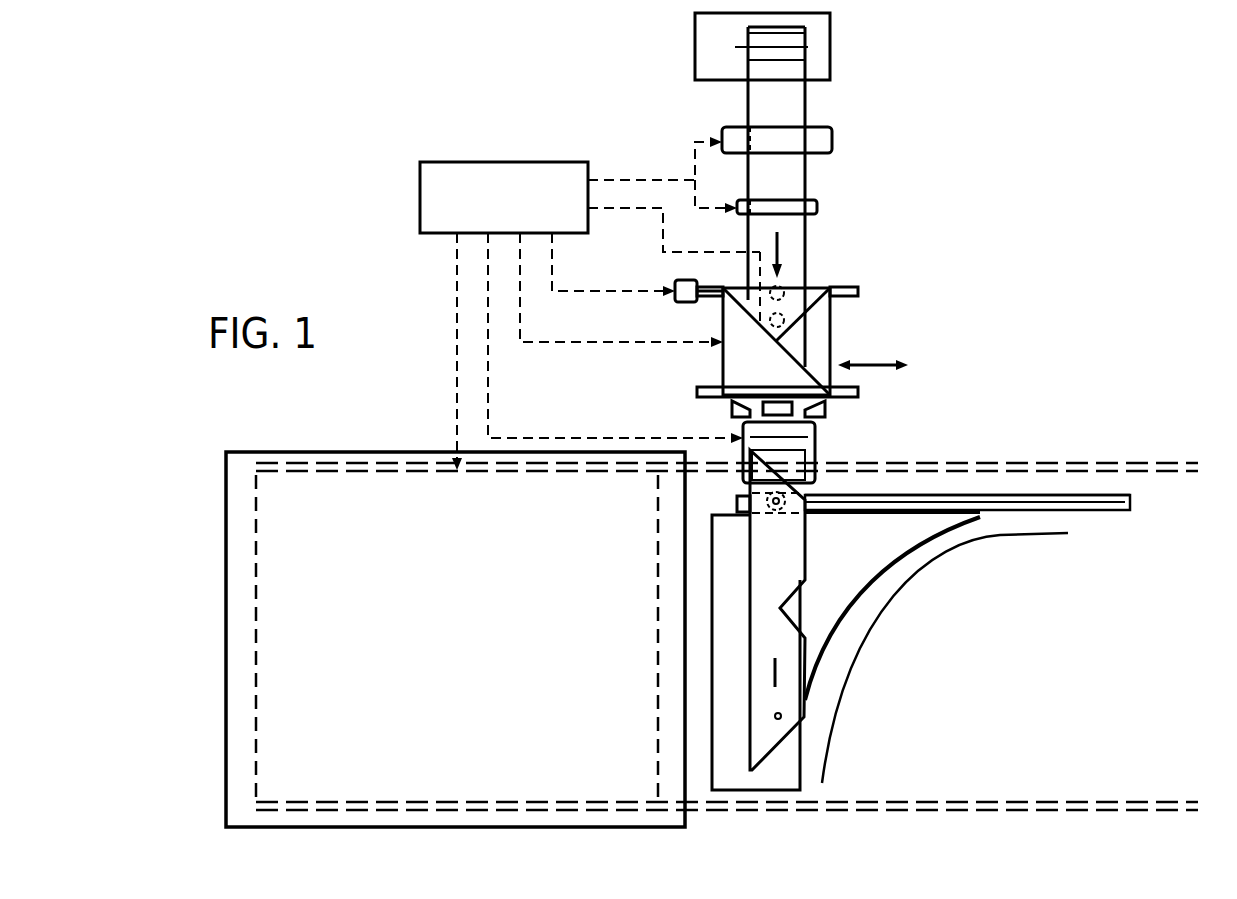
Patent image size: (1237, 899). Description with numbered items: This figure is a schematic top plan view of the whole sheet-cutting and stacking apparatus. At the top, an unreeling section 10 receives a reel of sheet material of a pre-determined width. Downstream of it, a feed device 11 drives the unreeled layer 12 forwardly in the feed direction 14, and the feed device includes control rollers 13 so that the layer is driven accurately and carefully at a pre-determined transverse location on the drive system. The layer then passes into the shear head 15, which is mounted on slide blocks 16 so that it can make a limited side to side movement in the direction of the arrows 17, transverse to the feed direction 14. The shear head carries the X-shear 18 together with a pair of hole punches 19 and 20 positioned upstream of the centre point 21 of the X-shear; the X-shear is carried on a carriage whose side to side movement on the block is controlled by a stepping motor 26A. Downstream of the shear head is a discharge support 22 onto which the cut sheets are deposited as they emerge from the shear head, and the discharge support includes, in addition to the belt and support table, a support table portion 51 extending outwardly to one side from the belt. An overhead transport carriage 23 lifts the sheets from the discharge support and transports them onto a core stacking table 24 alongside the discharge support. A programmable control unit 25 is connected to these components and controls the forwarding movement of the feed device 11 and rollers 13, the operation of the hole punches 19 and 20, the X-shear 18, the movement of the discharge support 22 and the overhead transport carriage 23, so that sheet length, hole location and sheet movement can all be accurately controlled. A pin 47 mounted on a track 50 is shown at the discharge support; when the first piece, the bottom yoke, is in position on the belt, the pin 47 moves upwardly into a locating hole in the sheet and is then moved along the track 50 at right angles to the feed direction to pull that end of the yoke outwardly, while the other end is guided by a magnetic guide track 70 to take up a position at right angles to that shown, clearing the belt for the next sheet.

The unreeling section 10 is at (826, 36).
The feed device 11 is at (824, 142).
The unreeled layer 12 is at (794, 106).
The control rollers 13 is at (808, 207).
The feed direction 14 is at (780, 236).
The shear head 15 is at (856, 337).
The slide blocks 16 is at (856, 286).
The arrows 17 is at (876, 368).
The X-shear 18 is at (740, 359).
The hole punch 19 is at (784, 283).
The hole punch 20 is at (783, 333).
The centre point 21 is at (762, 340).
The discharge support 22 is at (828, 445).
The overhead transport carriage 23 is at (242, 511).
The core stacking table 24 is at (389, 442).
The control unit 25 is at (453, 152).
The stepping motor 26A is at (637, 267).
The pin 47 is at (782, 508).
The track 50 is at (1098, 513).
The support table portion 51 is at (1110, 492).
The magnetic guide track 70 is at (852, 658).